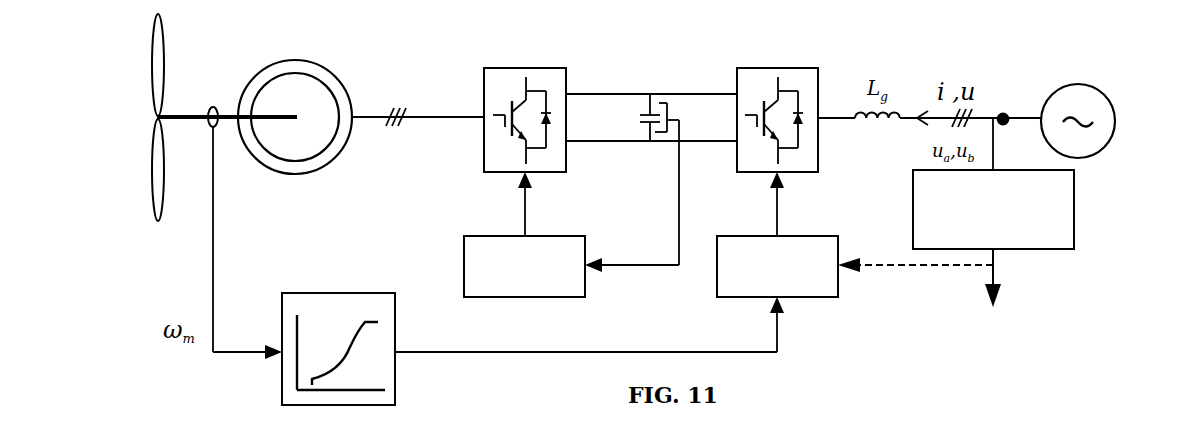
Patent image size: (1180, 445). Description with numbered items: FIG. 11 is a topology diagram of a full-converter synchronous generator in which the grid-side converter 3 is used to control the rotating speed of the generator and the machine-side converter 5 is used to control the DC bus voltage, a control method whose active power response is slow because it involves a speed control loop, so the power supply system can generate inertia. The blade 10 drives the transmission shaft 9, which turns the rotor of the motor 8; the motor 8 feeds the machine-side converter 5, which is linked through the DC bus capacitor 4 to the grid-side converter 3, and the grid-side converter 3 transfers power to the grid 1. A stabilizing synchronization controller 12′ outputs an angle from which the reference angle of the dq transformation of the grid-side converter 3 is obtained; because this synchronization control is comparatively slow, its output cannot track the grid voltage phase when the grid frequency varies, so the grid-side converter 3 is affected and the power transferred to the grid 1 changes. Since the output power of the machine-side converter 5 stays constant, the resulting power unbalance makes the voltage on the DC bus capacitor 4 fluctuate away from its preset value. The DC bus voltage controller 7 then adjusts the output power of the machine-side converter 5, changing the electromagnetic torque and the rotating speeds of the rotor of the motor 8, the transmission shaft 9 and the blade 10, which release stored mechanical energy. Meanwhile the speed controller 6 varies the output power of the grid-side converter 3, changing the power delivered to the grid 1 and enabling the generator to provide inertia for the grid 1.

The grid 1 is at (1077, 85).
The grid-side converter 3 is at (808, 68).
The DC bus capacitor 4 is at (653, 110).
The machine-side converter 5 is at (553, 68).
The speed controller 6 is at (817, 236).
The DC bus voltage controller 7 is at (568, 236).
The motor 8 is at (330, 72).
The transmission shaft 9 is at (187, 115).
The blade 10 is at (165, 52).
The stabilizing synchronization controller 12′ is at (1074, 215).